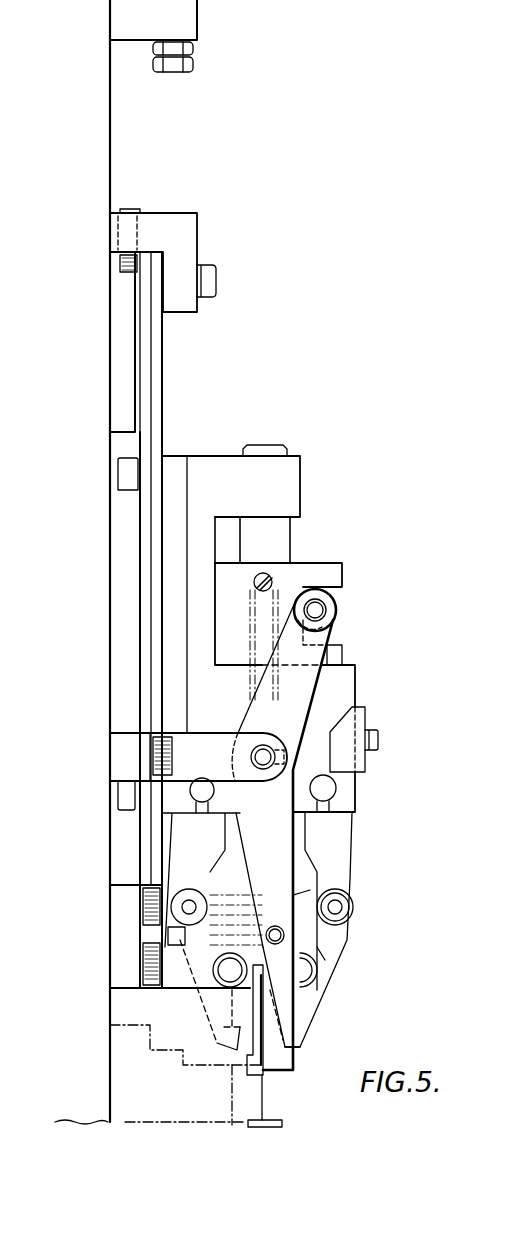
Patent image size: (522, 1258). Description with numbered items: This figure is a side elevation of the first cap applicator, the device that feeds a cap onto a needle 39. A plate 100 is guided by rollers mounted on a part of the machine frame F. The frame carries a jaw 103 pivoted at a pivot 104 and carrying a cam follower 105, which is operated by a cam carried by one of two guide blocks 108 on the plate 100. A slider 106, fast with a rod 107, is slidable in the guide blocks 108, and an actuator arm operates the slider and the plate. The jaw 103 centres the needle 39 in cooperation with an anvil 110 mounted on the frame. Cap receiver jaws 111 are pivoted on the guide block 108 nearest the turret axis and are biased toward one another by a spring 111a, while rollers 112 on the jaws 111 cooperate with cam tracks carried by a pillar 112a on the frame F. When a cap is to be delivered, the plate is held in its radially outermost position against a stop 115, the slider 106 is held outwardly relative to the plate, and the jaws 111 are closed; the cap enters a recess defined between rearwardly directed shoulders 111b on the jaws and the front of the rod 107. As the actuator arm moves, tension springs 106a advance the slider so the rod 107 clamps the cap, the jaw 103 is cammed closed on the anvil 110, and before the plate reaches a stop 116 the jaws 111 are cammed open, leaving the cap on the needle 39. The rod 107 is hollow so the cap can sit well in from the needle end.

The machine frame F is at (112, 140).
The stop 115 is at (172, 15).
The stop 116 is at (117, 281).
The plate 100 is at (162, 338).
The guide blocks 108 is at (293, 452).
The rod 107 is at (290, 537).
The slider 106 is at (323, 566).
The tension springs 106a is at (252, 635).
The cam follower 105 is at (337, 608).
The pivot 104 is at (265, 745).
The jaw 103 is at (283, 830).
The rollers 112 is at (188, 889).
The spring 111a is at (337, 880).
The pillar 112a is at (330, 960).
The cap receiver jaws 111 is at (215, 1040).
The rearwardly directed shoulders 111b is at (235, 1030).
The anvil 110 is at (247, 1062).
The needle 39 is at (265, 1092).